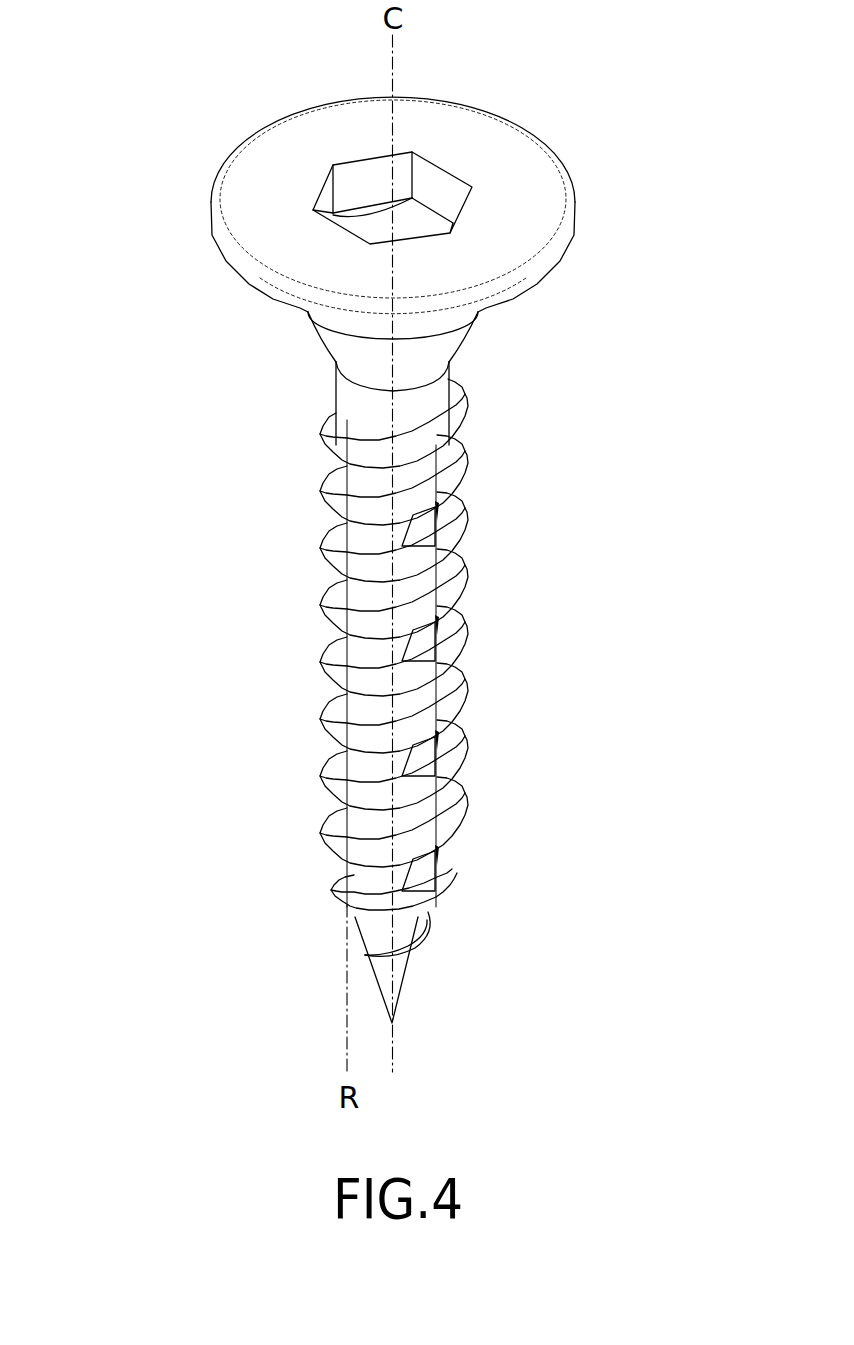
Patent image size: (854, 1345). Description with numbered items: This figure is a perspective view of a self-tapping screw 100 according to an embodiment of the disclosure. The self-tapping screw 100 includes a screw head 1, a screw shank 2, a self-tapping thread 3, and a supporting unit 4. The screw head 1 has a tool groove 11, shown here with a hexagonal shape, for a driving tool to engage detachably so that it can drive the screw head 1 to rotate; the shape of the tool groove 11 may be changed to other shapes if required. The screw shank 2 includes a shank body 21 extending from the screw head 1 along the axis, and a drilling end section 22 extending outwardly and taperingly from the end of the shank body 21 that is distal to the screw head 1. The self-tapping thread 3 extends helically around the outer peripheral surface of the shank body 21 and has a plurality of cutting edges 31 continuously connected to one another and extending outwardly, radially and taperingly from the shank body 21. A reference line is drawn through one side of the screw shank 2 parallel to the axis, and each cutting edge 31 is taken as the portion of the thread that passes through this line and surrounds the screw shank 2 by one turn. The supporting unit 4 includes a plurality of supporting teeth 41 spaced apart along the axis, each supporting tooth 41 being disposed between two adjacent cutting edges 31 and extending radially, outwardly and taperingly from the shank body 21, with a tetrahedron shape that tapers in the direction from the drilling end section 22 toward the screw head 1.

The self-tapping screw 100 is at (612, 117).
The screw head 1 is at (183, 190).
The tool groove 11 is at (442, 192).
The screw shank 2 is at (259, 642).
The shank body 21 is at (345, 399).
The drilling end section 22 is at (400, 973).
The self-tapping thread 3 is at (288, 488).
The cutting edges 31 is at (323, 505).
The supporting unit 4 is at (461, 742).
The supporting teeth 41 is at (430, 647).